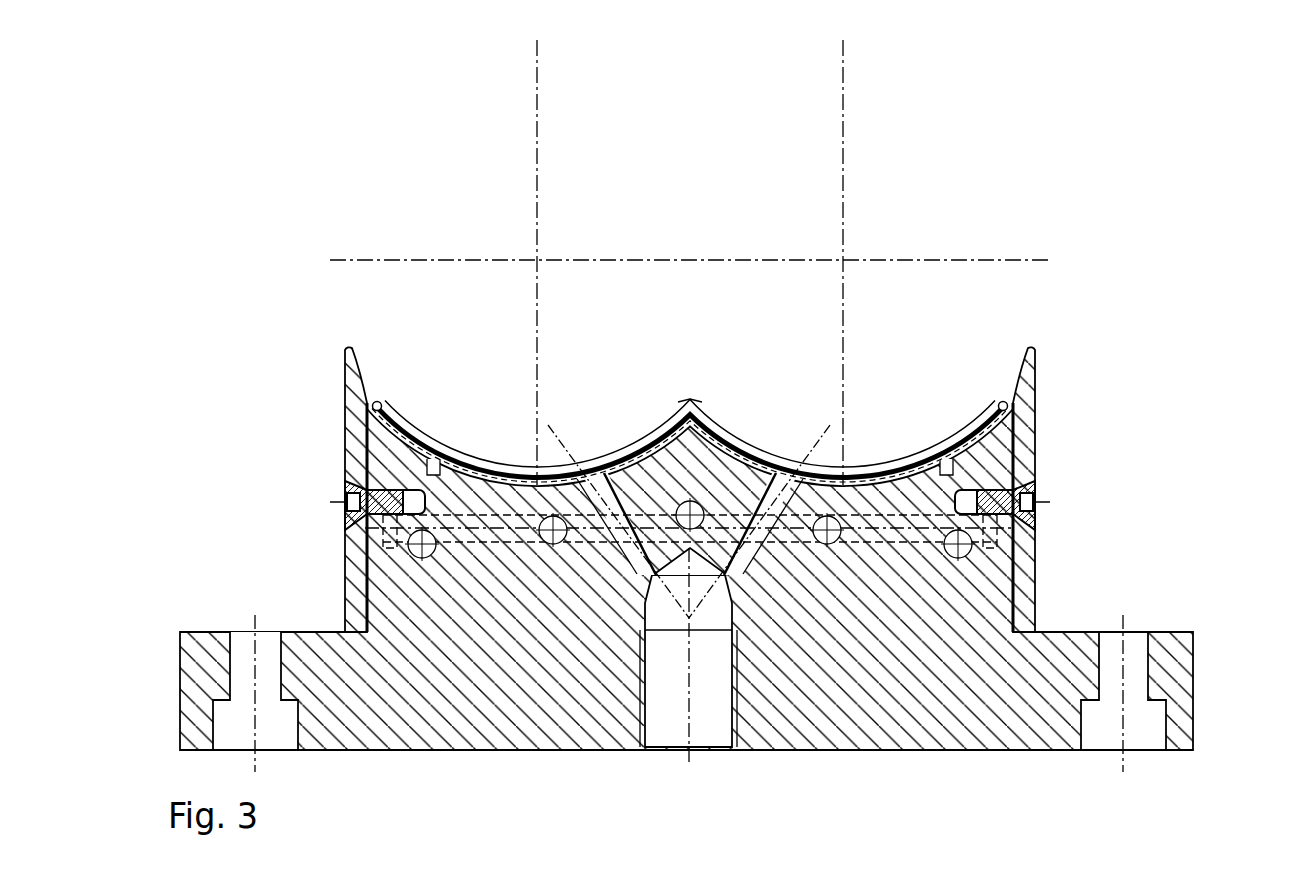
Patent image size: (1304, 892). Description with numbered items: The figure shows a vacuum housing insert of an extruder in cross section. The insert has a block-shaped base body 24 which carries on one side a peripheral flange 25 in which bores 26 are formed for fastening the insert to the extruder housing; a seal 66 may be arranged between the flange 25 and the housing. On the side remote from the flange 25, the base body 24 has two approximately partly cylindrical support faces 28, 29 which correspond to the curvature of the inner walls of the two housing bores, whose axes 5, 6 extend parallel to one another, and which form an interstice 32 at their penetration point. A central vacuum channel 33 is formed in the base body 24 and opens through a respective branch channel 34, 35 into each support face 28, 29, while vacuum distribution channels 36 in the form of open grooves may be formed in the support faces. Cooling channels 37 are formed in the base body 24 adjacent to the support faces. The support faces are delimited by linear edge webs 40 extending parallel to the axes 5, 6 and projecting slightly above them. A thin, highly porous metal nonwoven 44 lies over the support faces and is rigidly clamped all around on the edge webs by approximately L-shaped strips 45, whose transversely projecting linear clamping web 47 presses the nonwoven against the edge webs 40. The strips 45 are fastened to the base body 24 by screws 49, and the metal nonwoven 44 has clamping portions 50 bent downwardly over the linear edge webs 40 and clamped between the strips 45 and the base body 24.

The axis 5 is at (533, 247).
The axis 6 is at (839, 247).
The base body 24 is at (983, 574).
The peripheral flange 25 is at (1190, 709).
The bores 26 is at (244, 640).
The support face 28 is at (526, 470).
The support face 29 is at (730, 432).
The interstice 32 is at (691, 400).
The central vacuum channel 33 is at (697, 738).
The branch channel 34 is at (637, 580).
The branch channel 35 is at (740, 580).
The vacuum distribution channels 36 is at (436, 460).
The cooling channels 37 is at (686, 500).
The linear edge webs 40 is at (352, 350).
The metal nonwoven 44 is at (773, 458).
The strips 45 is at (352, 448).
The linear clamping web 47 is at (382, 402).
The screws 49 is at (350, 501).
The clamping portions 50 is at (365, 560).
The seal 66 is at (1164, 630).